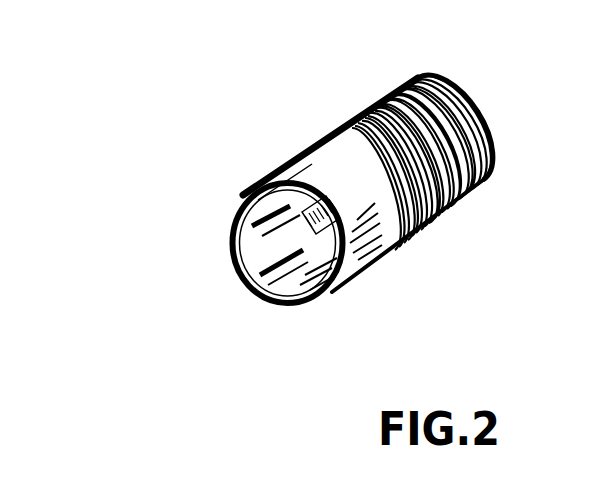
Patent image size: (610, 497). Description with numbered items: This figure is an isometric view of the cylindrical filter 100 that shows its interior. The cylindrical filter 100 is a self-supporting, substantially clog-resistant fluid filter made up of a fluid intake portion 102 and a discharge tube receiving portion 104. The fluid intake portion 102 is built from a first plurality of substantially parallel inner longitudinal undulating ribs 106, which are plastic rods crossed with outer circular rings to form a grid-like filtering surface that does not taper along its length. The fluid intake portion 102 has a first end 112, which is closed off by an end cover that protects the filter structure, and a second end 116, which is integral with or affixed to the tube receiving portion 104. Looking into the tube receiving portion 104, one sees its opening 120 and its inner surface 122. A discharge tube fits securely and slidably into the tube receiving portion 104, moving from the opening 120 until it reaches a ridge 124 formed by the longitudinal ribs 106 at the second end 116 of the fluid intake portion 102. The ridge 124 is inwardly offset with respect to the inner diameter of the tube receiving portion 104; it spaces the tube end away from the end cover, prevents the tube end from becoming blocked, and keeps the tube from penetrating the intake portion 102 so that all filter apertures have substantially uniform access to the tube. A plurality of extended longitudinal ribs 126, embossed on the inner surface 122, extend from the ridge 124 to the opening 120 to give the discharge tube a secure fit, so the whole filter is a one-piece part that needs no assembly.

The cylindrical filter 100 is at (495, 290).
The fluid intake portion 102 is at (335, 75).
The discharge tube receiving portion 104 is at (400, 285).
The inner longitudinal undulating ribs 106 is at (342, 188).
The first end 112 is at (478, 104).
The second end 116 is at (390, 252).
The opening 120 is at (283, 287).
The inner surface 122 is at (285, 275).
The ridge 124 is at (265, 242).
The extended longitudinal ribs 126 is at (258, 228).